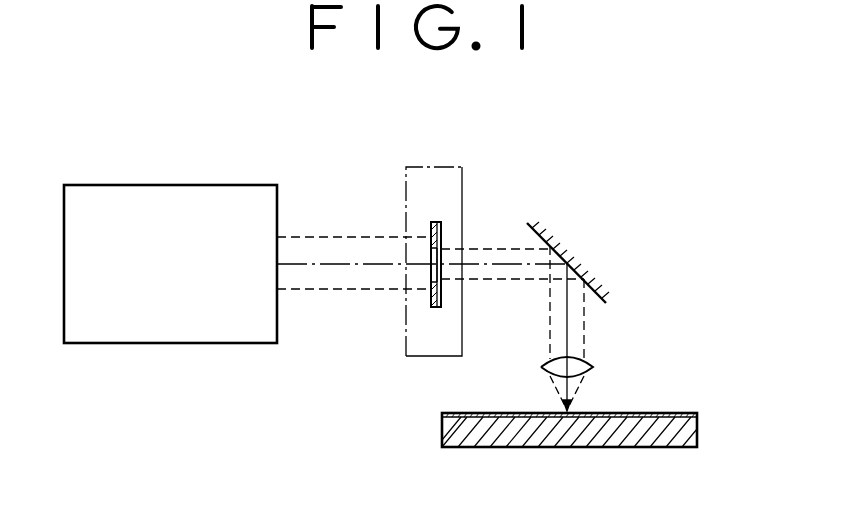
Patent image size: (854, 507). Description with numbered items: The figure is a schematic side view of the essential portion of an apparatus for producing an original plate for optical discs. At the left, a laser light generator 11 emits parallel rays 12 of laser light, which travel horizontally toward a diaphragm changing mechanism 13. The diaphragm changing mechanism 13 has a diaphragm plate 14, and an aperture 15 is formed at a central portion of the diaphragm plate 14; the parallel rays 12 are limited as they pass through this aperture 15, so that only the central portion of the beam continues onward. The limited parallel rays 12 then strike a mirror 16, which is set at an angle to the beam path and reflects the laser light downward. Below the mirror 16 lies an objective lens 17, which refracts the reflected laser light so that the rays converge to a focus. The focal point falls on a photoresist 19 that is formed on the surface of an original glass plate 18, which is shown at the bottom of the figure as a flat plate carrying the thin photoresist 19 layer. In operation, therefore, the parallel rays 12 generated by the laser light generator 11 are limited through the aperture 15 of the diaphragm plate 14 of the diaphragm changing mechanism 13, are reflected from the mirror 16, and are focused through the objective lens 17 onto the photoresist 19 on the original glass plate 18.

The laser light generator 11 is at (177, 185).
The parallel rays 12 is at (332, 288).
The diaphragm changing mechanism 13 is at (462, 192).
The diaphragm plate 14 is at (437, 306).
The aperture 15 is at (443, 273).
The mirror 16 is at (578, 268).
The objective lens 17 is at (590, 362).
The original glass plate 18 is at (678, 435).
The photoresist 19 is at (657, 412).